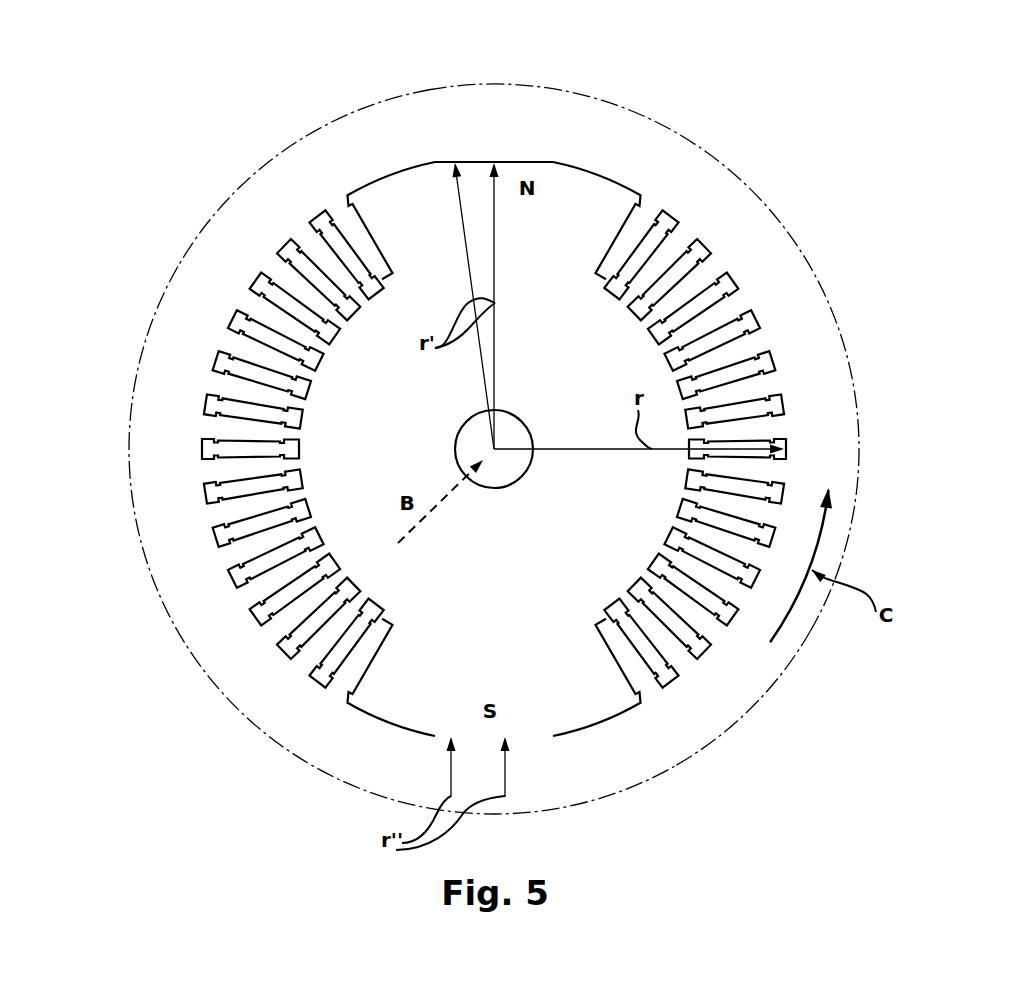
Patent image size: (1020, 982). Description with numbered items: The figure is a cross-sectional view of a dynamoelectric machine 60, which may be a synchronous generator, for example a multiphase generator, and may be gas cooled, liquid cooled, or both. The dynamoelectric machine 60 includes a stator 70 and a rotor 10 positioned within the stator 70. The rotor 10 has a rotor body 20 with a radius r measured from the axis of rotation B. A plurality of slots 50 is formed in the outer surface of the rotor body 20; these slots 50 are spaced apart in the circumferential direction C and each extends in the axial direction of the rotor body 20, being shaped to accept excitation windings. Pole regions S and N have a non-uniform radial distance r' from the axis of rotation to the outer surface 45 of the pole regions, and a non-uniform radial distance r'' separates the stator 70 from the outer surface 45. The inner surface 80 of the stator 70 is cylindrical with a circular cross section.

The dynamoelectric machine rotor 10 is at (682, 202).
The rotor body 20 is at (593, 360).
The outer surface of pole regions 45 is at (471, 160).
The plurality of slots 50 is at (318, 247).
The dynamoelectric machine 60 is at (289, 161).
The stator 70 is at (158, 284).
The inner surface of stator 80 is at (743, 713).